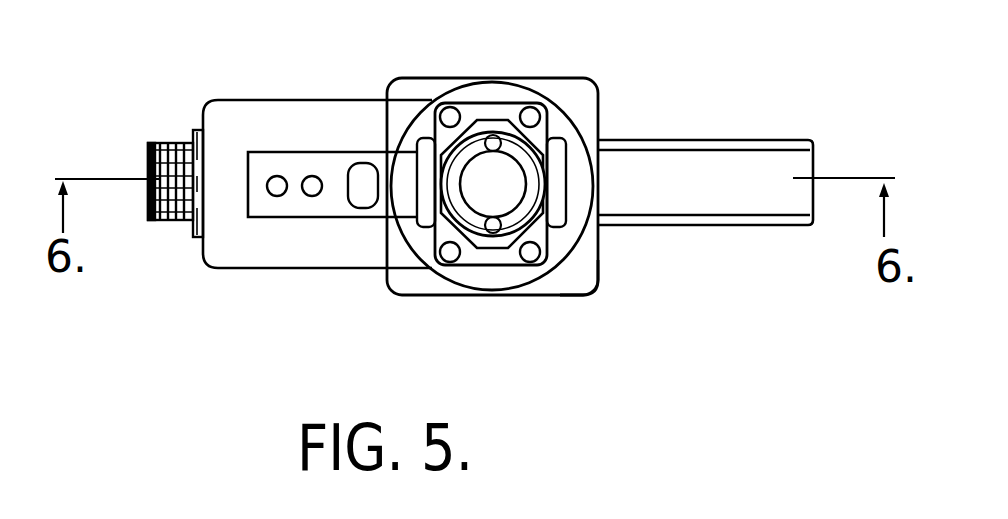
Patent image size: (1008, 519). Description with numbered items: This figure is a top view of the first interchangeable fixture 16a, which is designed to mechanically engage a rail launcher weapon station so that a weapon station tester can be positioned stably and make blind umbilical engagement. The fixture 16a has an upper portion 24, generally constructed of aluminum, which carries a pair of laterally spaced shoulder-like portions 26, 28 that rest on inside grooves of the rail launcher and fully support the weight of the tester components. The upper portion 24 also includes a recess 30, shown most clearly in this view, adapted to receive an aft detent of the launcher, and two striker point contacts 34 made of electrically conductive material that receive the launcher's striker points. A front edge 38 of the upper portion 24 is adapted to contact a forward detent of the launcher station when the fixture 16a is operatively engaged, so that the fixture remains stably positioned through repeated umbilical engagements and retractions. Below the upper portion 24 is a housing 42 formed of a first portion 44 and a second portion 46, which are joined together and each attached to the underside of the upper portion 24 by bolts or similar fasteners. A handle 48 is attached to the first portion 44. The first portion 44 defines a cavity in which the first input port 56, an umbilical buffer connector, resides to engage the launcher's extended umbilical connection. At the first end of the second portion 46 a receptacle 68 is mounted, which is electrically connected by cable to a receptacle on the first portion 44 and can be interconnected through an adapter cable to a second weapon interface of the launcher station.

The first interchangeable fixture 16a is at (124, 90).
The upper portion 24 is at (348, 152).
The shoulder-like portion 26 is at (493, 268).
The shoulder-like portion 28 is at (492, 100).
The recess 30 is at (362, 195).
The striker point contacts 34 is at (273, 177).
The front edge 38 is at (247, 208).
The housing 42 is at (598, 110).
The first portion 44 is at (578, 278).
The second portion 46 is at (238, 252).
The handle 48 is at (775, 203).
The first input port 56 is at (503, 152).
The receptacle 68 is at (150, 193).